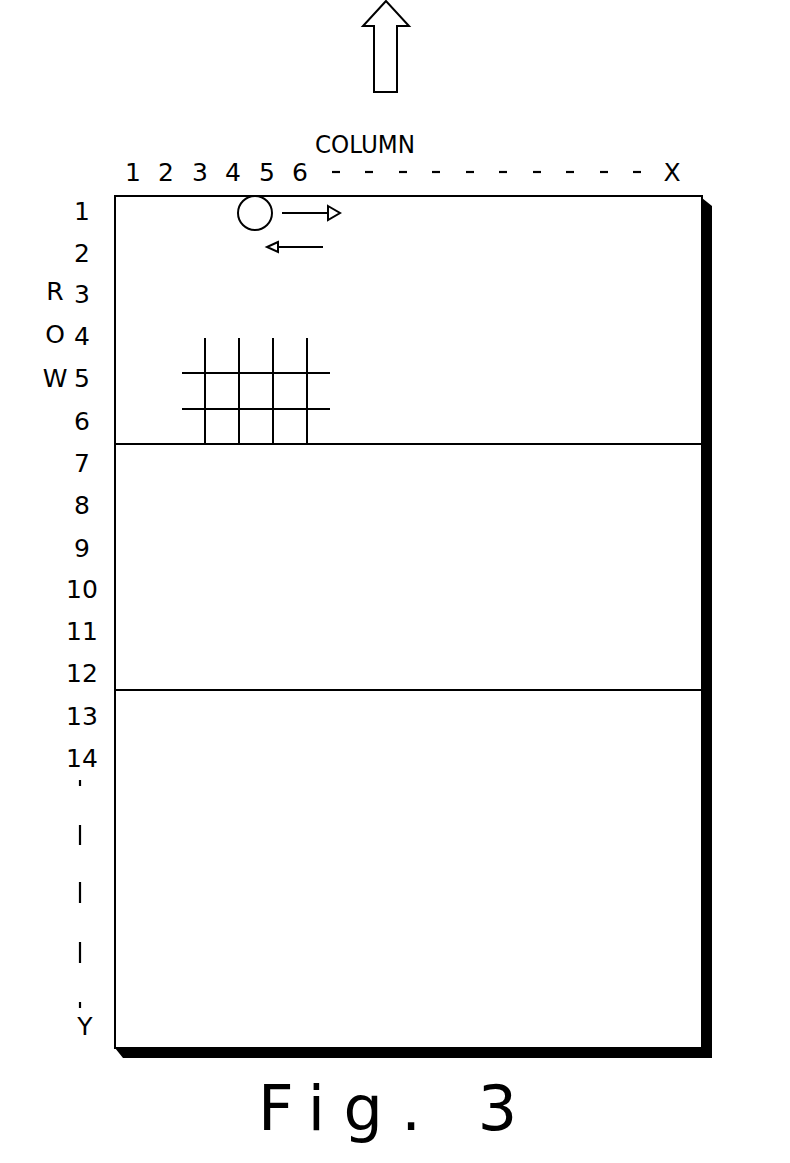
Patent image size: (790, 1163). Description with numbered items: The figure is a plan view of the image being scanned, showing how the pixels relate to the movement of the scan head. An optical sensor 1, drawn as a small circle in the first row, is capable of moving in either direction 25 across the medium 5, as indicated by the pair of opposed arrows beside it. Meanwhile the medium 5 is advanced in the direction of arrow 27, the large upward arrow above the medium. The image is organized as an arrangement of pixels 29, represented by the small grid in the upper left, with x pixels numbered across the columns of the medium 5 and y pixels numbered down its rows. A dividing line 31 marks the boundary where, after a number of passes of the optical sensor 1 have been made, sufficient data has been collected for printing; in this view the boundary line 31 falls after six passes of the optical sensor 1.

The optical sensor 1 is at (241, 226).
The medium 5 is at (611, 197).
The direction of movement 25 is at (330, 217).
The arrow 27 is at (397, 60).
The pixels 29 is at (289, 392).
The dividing line 31 is at (598, 443).